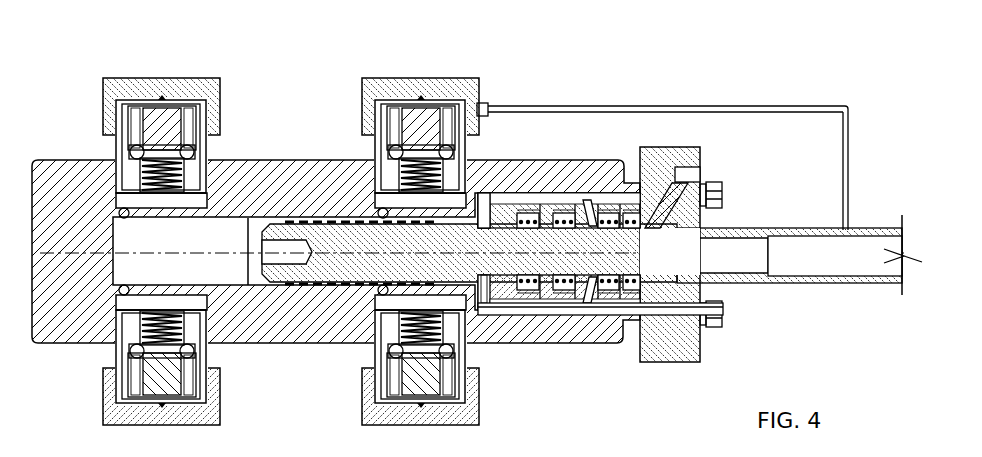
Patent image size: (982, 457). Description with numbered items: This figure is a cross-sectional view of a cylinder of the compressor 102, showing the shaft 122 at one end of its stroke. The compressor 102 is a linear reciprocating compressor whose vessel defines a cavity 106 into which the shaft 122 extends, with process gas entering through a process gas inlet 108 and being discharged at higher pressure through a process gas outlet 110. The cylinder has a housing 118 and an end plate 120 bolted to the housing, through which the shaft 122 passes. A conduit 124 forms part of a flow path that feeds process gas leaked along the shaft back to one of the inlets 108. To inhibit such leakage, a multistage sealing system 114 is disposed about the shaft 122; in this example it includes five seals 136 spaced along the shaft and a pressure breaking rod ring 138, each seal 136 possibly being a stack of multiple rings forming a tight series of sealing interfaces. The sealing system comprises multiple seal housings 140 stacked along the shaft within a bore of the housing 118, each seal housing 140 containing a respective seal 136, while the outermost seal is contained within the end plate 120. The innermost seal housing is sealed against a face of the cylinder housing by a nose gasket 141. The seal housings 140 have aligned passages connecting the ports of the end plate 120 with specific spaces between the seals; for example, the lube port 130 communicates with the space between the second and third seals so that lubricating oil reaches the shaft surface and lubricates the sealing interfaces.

The compressor 102 is at (91, 45).
The cavity 106 is at (197, 246).
The process gas inlet 108 is at (346, 88).
The process gas outlet 110 is at (346, 394).
The multistage sealing system 114 is at (494, 380).
The housing 118 is at (42, 343).
The end plate 120 is at (670, 362).
The shaft 122 is at (822, 283).
The conduit 124 is at (822, 106).
The lube port 130 is at (700, 170).
The seals 136 is at (560, 306).
The pressure breaking rod ring 138 is at (484, 210).
The seal housings 140 is at (493, 210).
The nose gasket 141 is at (388, 224).